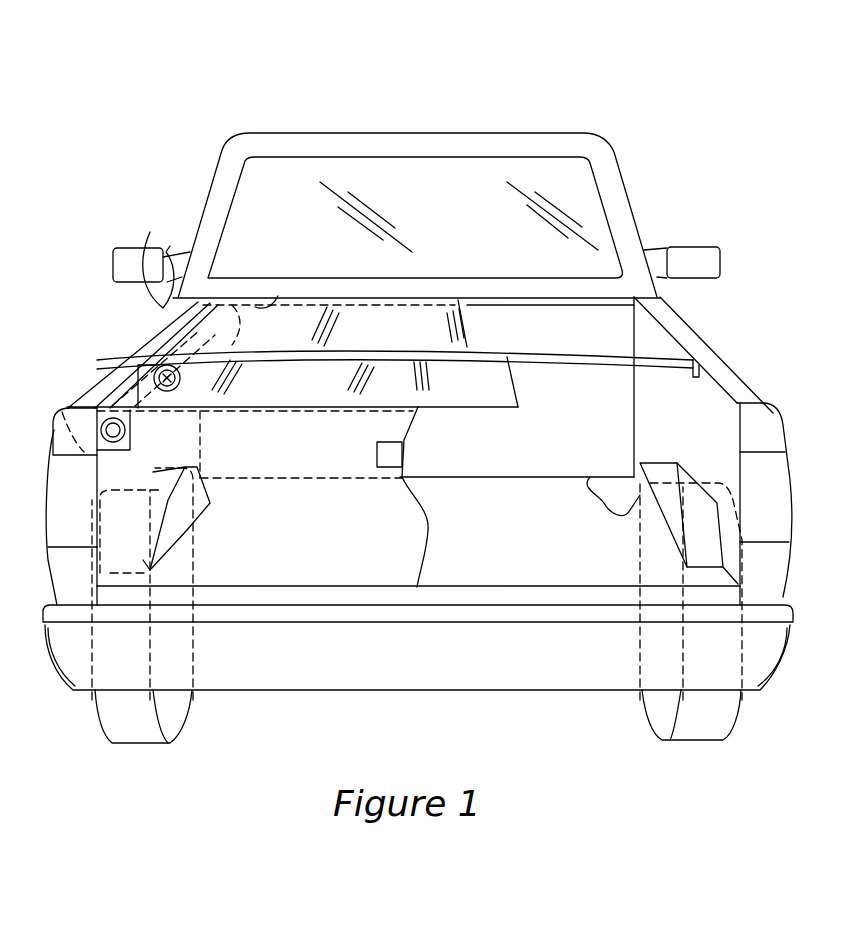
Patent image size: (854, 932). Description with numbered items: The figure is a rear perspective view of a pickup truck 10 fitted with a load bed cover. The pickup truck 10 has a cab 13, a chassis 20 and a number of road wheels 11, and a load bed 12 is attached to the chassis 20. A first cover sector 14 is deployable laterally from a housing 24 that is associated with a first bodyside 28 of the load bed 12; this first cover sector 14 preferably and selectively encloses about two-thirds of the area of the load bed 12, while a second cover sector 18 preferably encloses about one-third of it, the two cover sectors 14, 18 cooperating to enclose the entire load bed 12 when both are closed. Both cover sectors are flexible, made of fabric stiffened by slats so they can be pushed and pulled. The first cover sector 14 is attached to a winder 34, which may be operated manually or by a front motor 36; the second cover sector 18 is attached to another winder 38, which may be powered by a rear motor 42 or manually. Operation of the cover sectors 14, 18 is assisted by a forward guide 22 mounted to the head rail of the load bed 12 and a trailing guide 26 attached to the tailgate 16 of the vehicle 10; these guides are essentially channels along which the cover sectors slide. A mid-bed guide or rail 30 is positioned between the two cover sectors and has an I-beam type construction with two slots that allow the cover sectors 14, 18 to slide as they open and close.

The pickup truck 10 is at (624, 100).
The road wheels 11 is at (118, 723).
The load bed 12 is at (530, 524).
The cab 13 is at (418, 148).
The first cover sector 14 is at (397, 337).
The tailgate 16 is at (402, 527).
The second cover sector 18 is at (480, 392).
The chassis 20 is at (615, 483).
The forward guide 22 is at (278, 296).
The housing 24 is at (203, 452).
The trailing guide 26 is at (259, 415).
The first bodyside 28 is at (150, 232).
The mid-bed guide or rail 30 is at (623, 355).
The winder 34 is at (112, 385).
The front motor 36 is at (130, 362).
The winder 38 is at (54, 420).
The rear motor 42 is at (66, 398).